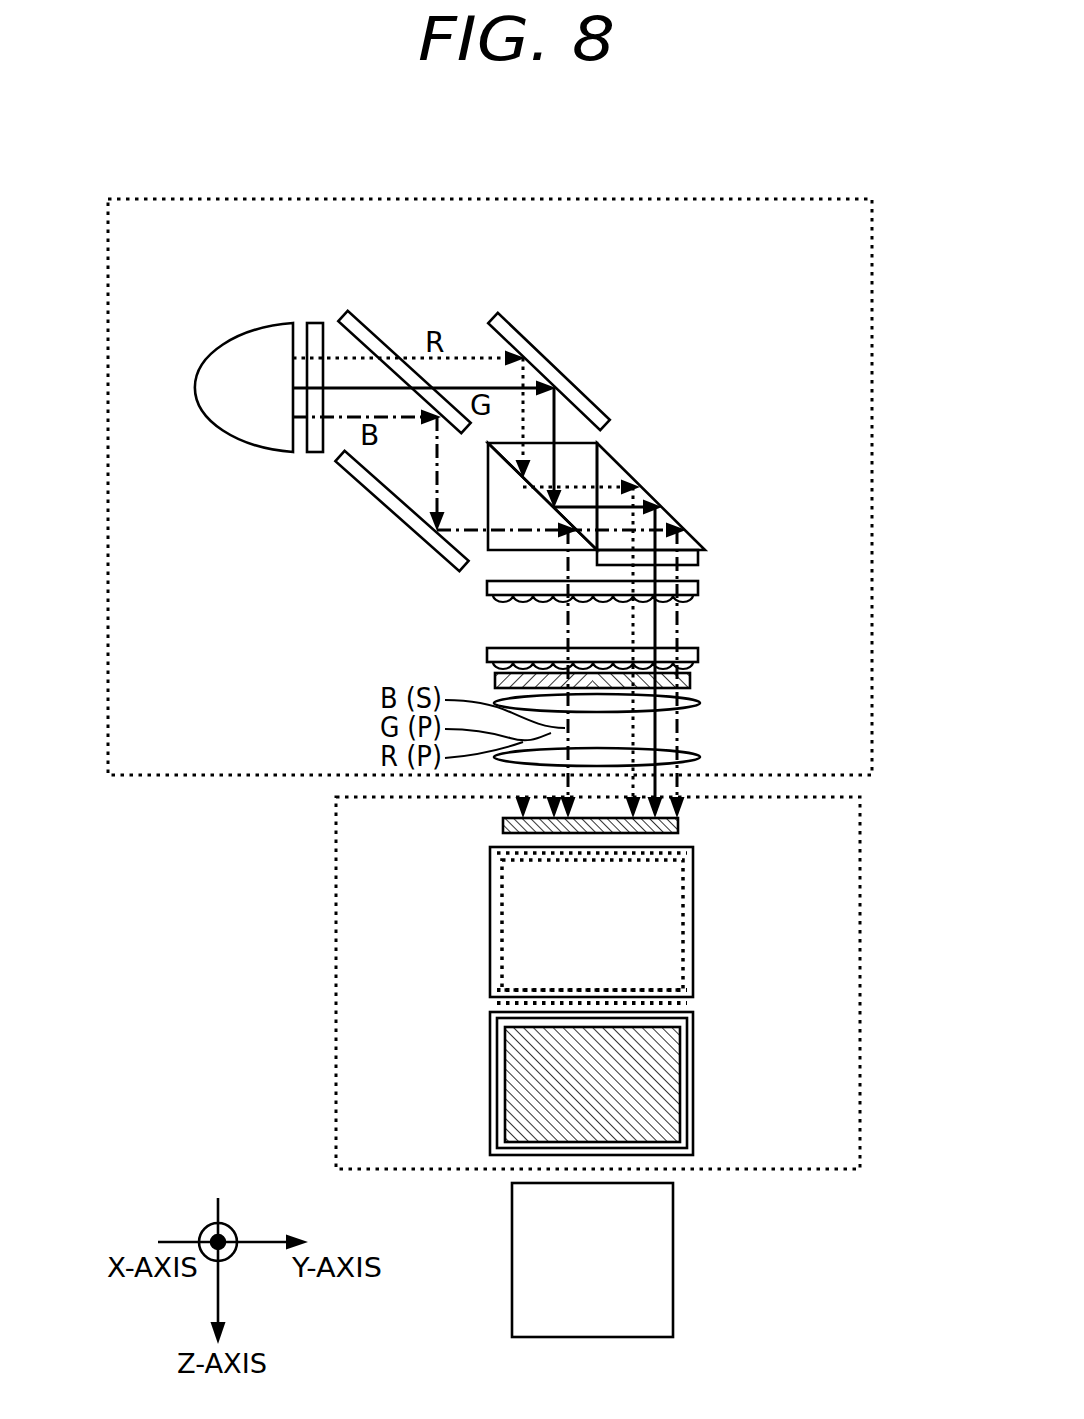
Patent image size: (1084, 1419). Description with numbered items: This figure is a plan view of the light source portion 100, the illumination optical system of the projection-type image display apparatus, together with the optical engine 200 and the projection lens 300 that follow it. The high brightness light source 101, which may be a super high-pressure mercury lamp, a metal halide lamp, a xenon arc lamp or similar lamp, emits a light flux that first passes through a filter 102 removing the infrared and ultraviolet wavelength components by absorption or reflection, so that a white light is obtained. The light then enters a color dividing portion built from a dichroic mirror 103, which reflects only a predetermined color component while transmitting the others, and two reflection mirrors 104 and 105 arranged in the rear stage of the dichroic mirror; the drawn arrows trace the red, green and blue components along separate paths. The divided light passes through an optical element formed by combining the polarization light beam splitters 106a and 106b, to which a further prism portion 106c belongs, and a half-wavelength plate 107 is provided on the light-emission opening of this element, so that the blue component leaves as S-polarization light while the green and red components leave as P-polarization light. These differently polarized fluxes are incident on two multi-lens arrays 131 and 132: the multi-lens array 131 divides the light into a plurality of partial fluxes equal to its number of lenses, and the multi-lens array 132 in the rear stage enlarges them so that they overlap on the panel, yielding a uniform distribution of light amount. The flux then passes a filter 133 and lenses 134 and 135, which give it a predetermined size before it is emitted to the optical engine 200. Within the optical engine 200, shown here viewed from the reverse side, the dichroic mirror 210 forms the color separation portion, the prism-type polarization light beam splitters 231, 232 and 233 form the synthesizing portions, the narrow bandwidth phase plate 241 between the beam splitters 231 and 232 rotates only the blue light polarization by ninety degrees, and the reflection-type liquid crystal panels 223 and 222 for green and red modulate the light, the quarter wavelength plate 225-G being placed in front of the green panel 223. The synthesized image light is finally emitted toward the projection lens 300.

The light source portion 100 is at (777, 198).
The high brightness light source 101 is at (233, 345).
The filter 102 is at (318, 336).
The dichroic mirror 103 is at (370, 320).
The reflection mirror 104 is at (392, 504).
The reflection mirror 105 is at (518, 318).
The polarization light beam splitter 106a is at (497, 553).
The polarization light beam splitter 106b is at (580, 455).
The prism 106c is at (670, 507).
The ½-wavelength plate 107 is at (705, 553).
The multi-lens array 131 is at (698, 589).
The multi-lens array 132 is at (698, 655).
The filter 133 is at (690, 681).
The lens 134 is at (700, 704).
The lens 135 is at (700, 757).
The optical engine 200 is at (787, 1162).
The reflection-type liquid crystal panel 223 is at (503, 826).
The ¼ wavelength plate 225-G is at (497, 853).
The dichroic mirror 210 is at (693, 870).
The polarization light beam splitter 231 is at (683, 920).
The narrow bandwidth phase plate 241 is at (687, 988).
The polarization light beam splitter 232 is at (693, 1040).
The polarization light beam splitter 233 is at (687, 1080).
The reflection-type liquid crystal panel 222 is at (668, 1125).
The projection lens 300 is at (665, 1266).